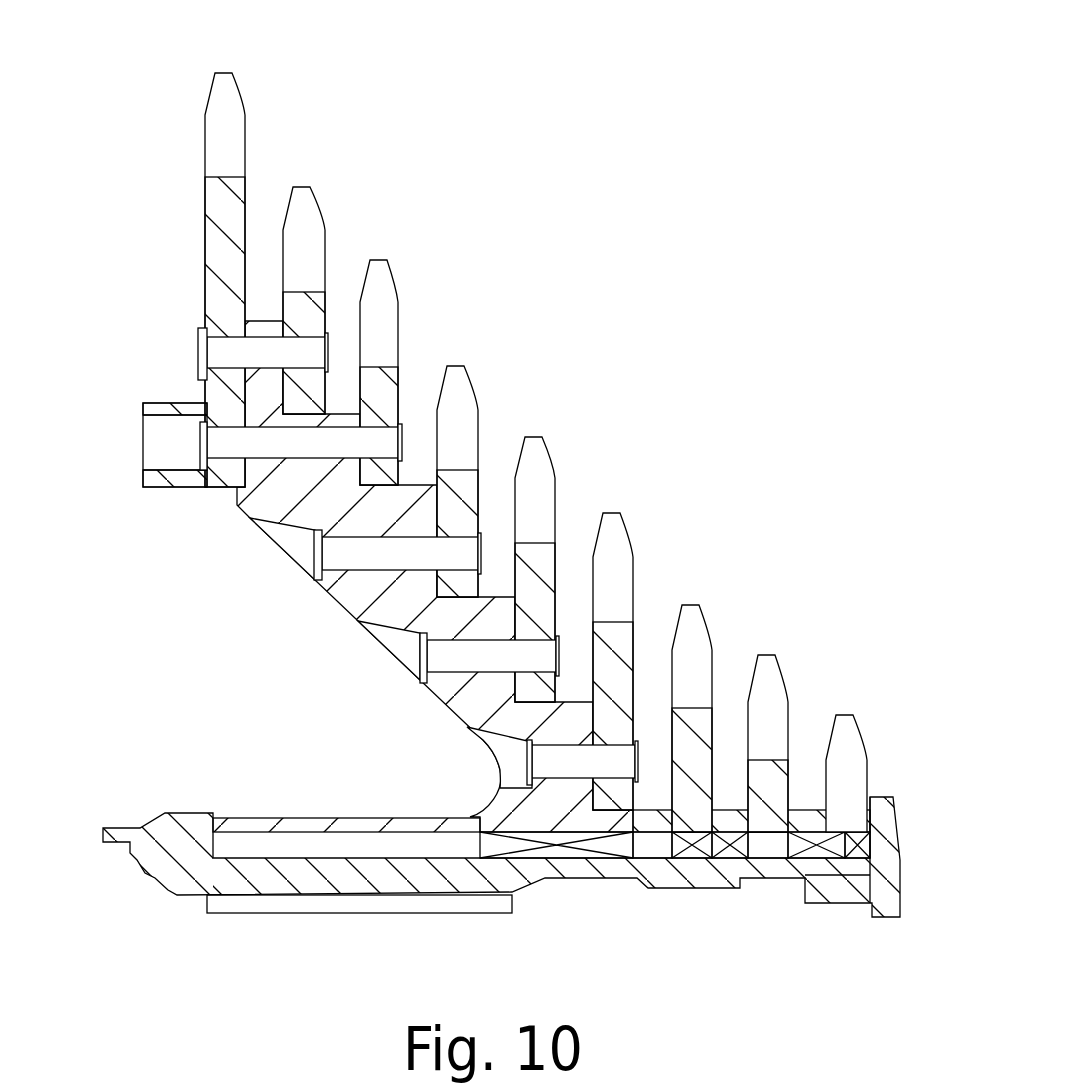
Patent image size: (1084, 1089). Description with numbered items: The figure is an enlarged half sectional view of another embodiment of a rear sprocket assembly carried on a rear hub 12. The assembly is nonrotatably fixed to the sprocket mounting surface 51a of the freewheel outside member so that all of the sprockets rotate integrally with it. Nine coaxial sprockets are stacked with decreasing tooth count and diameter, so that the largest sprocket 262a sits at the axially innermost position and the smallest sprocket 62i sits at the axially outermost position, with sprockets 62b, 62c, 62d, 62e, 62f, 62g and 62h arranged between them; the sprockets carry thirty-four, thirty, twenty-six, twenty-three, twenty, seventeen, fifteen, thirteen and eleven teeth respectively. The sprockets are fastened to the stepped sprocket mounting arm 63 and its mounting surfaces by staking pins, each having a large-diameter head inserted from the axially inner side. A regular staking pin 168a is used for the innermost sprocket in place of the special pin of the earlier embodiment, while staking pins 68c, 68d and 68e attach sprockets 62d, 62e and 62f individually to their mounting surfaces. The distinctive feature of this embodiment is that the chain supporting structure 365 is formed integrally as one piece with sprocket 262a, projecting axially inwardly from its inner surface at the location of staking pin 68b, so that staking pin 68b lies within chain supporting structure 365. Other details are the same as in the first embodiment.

The rear hub 12 is at (122, 798).
The sprocket mounting surface 51a is at (317, 815).
The sprocket mounting arm 63 is at (248, 518).
The sprocket 262a is at (227, 103).
The chain supporting structure 365 is at (158, 402).
The sprocket 62b is at (302, 203).
The sprocket 62c is at (378, 281).
The sprocket 62d is at (457, 385).
The sprocket 62e is at (535, 453).
The sprocket 62f is at (613, 532).
The sprocket 62g is at (692, 625).
The sprocket 62h is at (773, 685).
The sprocket 62i is at (855, 752).
The staking pin 168a is at (294, 353).
The staking pin 68b is at (368, 447).
The staking pin 68c is at (450, 547).
The staking pin 68d is at (528, 655).
The staking pin 68e is at (608, 757).